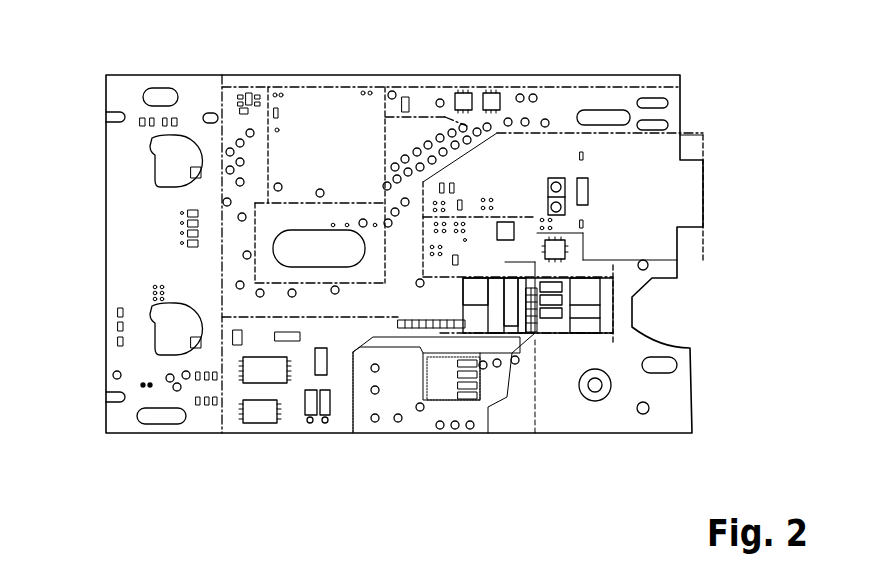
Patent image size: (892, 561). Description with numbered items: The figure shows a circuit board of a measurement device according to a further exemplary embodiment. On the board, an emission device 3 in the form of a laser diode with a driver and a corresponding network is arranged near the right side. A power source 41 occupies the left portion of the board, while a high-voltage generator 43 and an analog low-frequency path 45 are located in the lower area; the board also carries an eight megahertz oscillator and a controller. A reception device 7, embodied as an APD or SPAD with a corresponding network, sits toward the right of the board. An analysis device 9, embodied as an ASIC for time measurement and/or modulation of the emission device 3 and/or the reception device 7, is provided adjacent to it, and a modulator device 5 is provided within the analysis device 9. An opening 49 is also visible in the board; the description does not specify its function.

The power source 41 is at (118, 205).
The opening 49 is at (352, 237).
The modulator device 5 is at (508, 228).
The emission device 3 is at (560, 197).
The analysis device 9 is at (520, 259).
The reception device 7 is at (595, 309).
The high-voltage generator 43 is at (288, 392).
The analog low-frequency path 45 is at (453, 395).